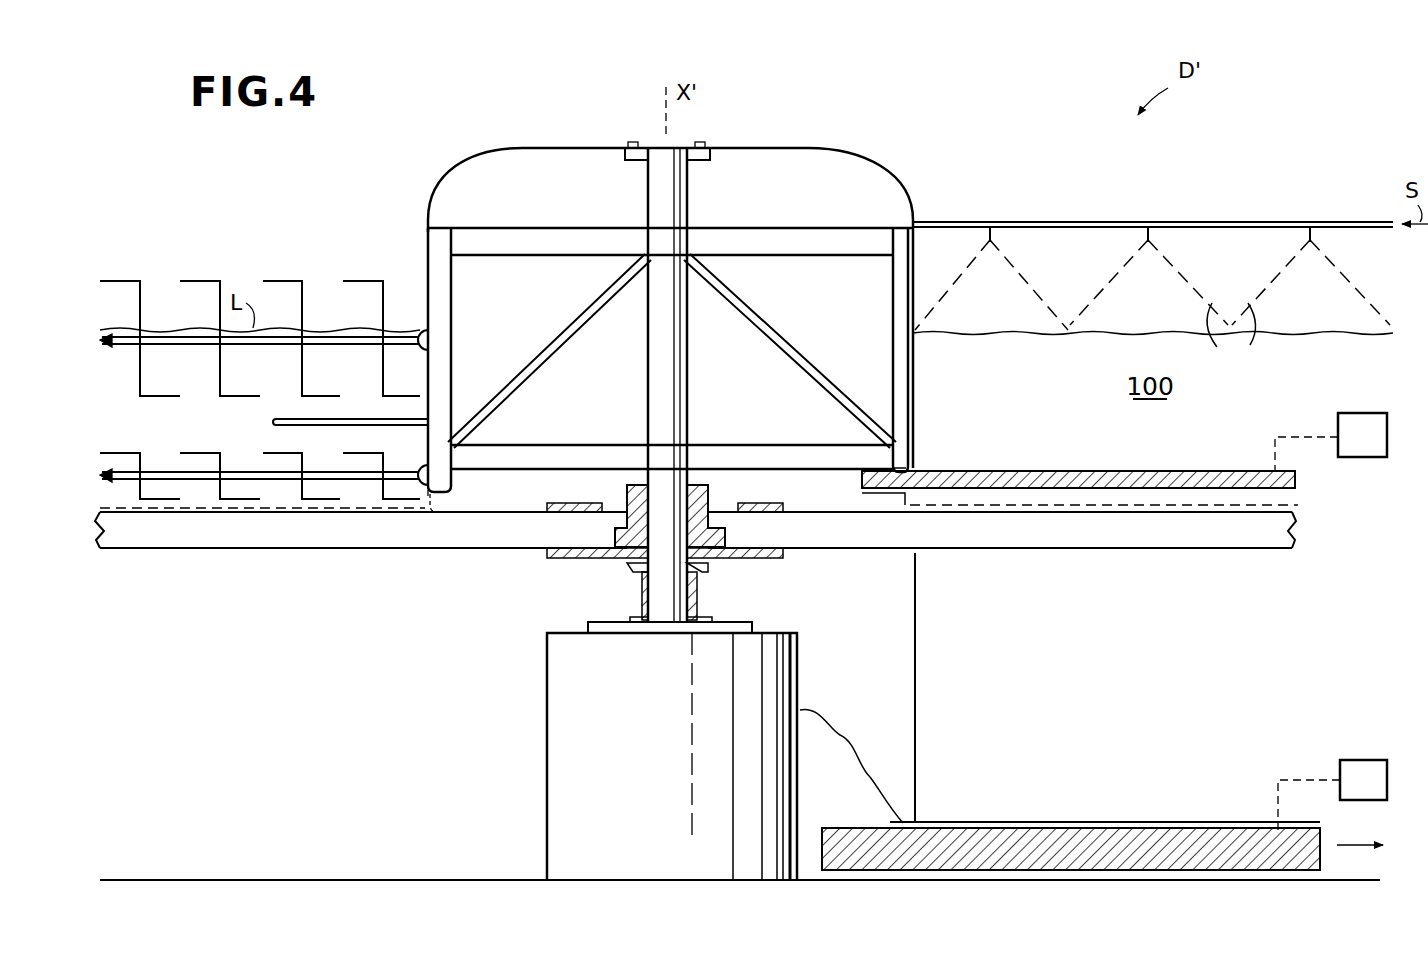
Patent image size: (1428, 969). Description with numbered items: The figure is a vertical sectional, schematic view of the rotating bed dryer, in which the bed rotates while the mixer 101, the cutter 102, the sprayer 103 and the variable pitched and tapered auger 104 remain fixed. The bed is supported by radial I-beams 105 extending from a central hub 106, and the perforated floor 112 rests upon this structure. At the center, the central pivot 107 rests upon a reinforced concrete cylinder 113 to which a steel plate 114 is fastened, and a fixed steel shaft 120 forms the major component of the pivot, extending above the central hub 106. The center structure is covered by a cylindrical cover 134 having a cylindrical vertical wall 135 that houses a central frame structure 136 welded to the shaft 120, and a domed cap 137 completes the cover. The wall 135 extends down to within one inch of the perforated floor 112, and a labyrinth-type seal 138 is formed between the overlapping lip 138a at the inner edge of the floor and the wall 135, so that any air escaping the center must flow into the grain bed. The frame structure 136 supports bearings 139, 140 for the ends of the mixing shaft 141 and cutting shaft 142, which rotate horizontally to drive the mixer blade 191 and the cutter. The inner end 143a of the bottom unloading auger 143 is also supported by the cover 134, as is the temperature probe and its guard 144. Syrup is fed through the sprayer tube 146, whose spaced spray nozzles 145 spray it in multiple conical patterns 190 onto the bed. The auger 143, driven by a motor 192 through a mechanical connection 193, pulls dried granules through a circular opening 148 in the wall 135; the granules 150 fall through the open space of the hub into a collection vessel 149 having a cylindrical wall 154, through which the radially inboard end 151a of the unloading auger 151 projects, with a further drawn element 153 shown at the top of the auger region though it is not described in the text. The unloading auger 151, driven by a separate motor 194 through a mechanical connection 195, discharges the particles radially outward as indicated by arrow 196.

The mixer 101 is at (260, 299).
The cutter 102 is at (207, 503).
The sprayer 103 is at (1153, 246).
The variable pitched and tapered auger 104 is at (1078, 453).
The I-beams 105 is at (695, 554).
The central hub 106 is at (716, 510).
The central pivot 107 is at (681, 357).
The perforated floor 112 is at (296, 530).
The reinforced concrete cylinder 113 is at (612, 698).
The steel plate 114 is at (722, 622).
The steel shaft 120 is at (708, 385).
The cylindrical cover 134 is at (715, 360).
The cylindrical vertical wall 135 is at (913, 368).
The central frame structure 136 is at (715, 360).
The domed cap 137 is at (575, 148).
The labyrinth-type seal 138 is at (455, 500).
The overlapping lip 138a is at (440, 514).
The bearing 139 is at (436, 343).
The bearing 140 is at (472, 470).
The mixing shaft 141 is at (203, 346).
The cutting shaft 142 is at (167, 470).
The bottom unloading auger 143 is at (1140, 472).
The inner end of auger 143a is at (878, 492).
The temperature probe and guard 144 is at (283, 423).
The spray nozzles 145 is at (992, 242).
The sprayer tube 146 is at (1115, 222).
The circular opening 148 is at (906, 460).
The collection vessel 149 is at (947, 688).
The granules 150 is at (826, 760).
The unloading auger 151 is at (1060, 850).
The radially inboard end of unloading auger 151a is at (848, 850).
The plate top surface 153 is at (915, 828).
The cylindrical wall of collection vessel 154 is at (916, 718).
The conical spray pattern 190 is at (1237, 336).
The mixer blade 191 is at (356, 282).
The motor 192 is at (1350, 457).
The mechanical connection 193 is at (1305, 436).
The motor 194 is at (1383, 800).
The mechanical connection 195 is at (1276, 790).
The arrow 196 is at (1385, 845).